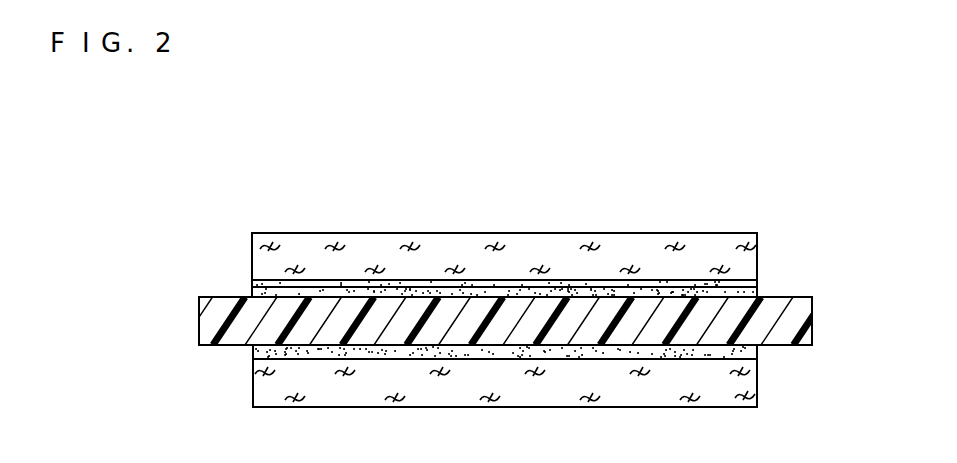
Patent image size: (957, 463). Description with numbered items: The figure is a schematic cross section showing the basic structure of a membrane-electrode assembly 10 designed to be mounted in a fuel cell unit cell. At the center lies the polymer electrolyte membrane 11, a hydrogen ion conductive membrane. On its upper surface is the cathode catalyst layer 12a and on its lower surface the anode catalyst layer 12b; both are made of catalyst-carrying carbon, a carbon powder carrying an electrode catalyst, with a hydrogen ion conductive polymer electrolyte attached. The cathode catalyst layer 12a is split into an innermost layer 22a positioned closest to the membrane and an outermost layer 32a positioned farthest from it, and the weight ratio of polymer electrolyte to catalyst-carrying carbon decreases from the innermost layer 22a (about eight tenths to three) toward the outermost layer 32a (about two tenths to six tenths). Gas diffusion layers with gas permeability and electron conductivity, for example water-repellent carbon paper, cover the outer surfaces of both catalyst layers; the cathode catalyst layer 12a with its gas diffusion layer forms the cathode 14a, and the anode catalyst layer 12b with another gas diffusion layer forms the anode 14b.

The membrane-electrode assembly 10 is at (522, 220).
The polymer electrolyte membrane 11 is at (797, 323).
The cathode catalyst layer 12a is at (758, 278).
The anode catalyst layer 12b is at (757, 350).
The cathode 14a is at (811, 225).
The anode 14b is at (831, 355).
The innermost layer 22a is at (257, 293).
The outermost layer 32a is at (265, 281).